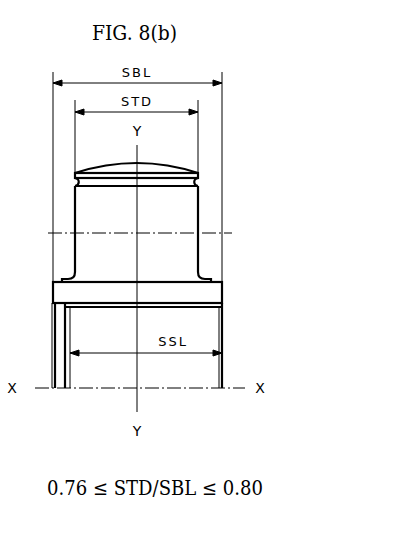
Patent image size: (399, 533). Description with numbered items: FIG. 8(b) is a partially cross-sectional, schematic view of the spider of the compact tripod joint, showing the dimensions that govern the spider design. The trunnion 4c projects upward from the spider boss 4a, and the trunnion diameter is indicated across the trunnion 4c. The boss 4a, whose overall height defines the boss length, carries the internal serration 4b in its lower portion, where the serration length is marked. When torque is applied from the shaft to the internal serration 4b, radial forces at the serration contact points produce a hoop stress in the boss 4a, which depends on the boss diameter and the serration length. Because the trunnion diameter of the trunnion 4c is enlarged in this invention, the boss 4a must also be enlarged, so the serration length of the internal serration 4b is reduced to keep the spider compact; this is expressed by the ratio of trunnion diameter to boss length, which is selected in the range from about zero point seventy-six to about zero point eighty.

The trunnion 4c is at (177, 220).
The spider boss 4a is at (185, 293).
The internal serration 4b is at (197, 305).